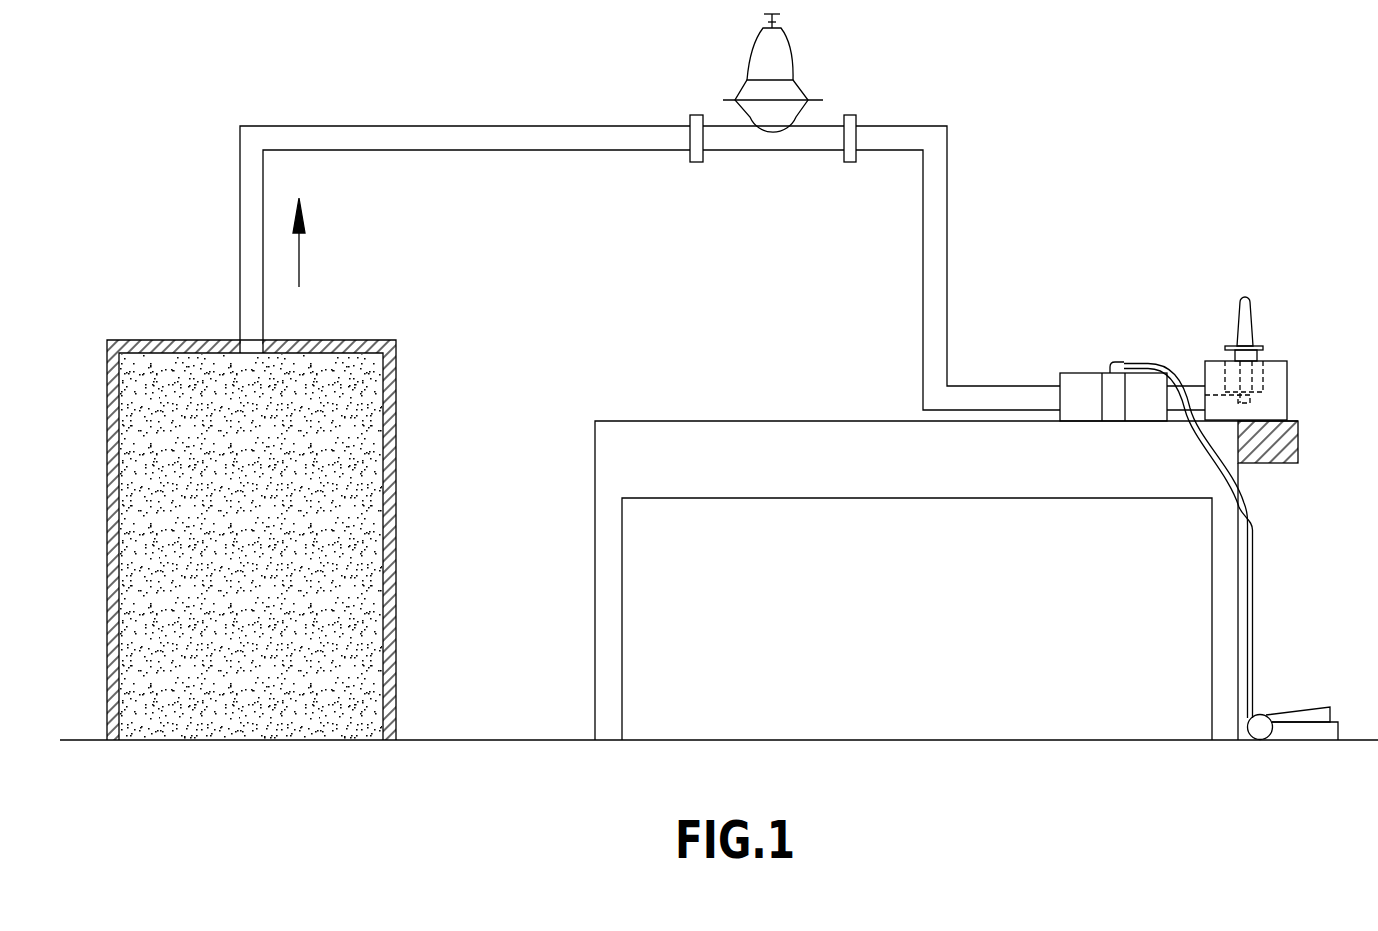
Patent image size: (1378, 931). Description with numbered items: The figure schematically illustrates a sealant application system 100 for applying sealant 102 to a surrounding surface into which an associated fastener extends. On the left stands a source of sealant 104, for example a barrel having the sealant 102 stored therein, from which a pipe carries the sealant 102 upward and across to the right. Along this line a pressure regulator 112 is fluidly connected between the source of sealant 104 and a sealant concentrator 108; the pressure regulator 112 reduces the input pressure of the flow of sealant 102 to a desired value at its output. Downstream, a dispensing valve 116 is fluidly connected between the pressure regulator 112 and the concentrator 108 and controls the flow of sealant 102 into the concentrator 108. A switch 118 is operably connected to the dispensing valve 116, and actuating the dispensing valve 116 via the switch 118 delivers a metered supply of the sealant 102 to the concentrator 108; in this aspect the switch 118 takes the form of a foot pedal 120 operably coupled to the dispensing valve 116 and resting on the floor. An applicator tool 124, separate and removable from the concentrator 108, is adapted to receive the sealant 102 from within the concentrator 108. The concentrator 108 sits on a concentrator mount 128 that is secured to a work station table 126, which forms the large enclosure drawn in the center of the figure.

The sealant application system 100 is at (719, 411).
The sealant 102 is at (335, 640).
The source of sealant 104 is at (390, 445).
The sealant concentrator 108 is at (1287, 378).
The pressure regulator 112 is at (790, 90).
The dispensing valve 116 is at (1080, 373).
The switch 118 is at (1295, 708).
The foot pedal 120 is at (1305, 735).
The applicator tool 124 is at (1238, 312).
The work station table 126 is at (967, 498).
The concentrator mount 128 is at (1291, 463).